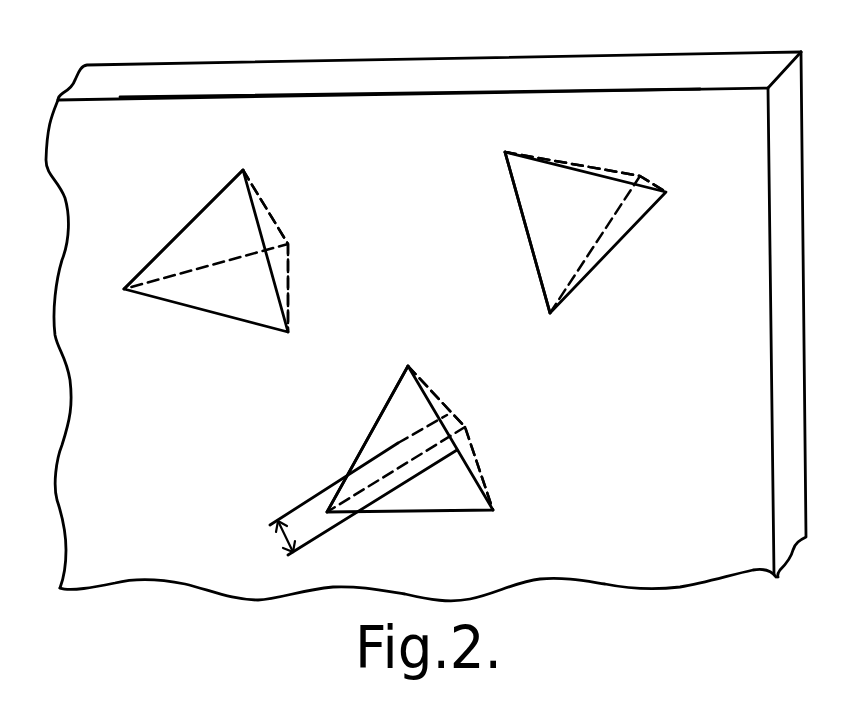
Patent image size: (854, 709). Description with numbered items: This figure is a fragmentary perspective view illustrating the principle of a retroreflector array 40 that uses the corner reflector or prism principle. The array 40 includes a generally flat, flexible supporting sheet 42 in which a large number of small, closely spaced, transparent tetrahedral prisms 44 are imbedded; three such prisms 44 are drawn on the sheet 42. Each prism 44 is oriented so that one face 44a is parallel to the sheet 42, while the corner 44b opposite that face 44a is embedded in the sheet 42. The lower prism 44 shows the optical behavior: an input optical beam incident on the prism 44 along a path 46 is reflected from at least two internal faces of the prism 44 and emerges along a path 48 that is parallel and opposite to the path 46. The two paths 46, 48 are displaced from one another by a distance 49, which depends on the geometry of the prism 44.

The retroreflector array 40 is at (287, 56).
The supporting sheet 42 is at (578, 72).
The tetrahedral prism 44 is at (207, 200).
The face 44a is at (197, 233).
The corner 44b is at (290, 240).
The path 46 is at (298, 503).
The path 48 is at (327, 526).
The distance 49 is at (284, 536).